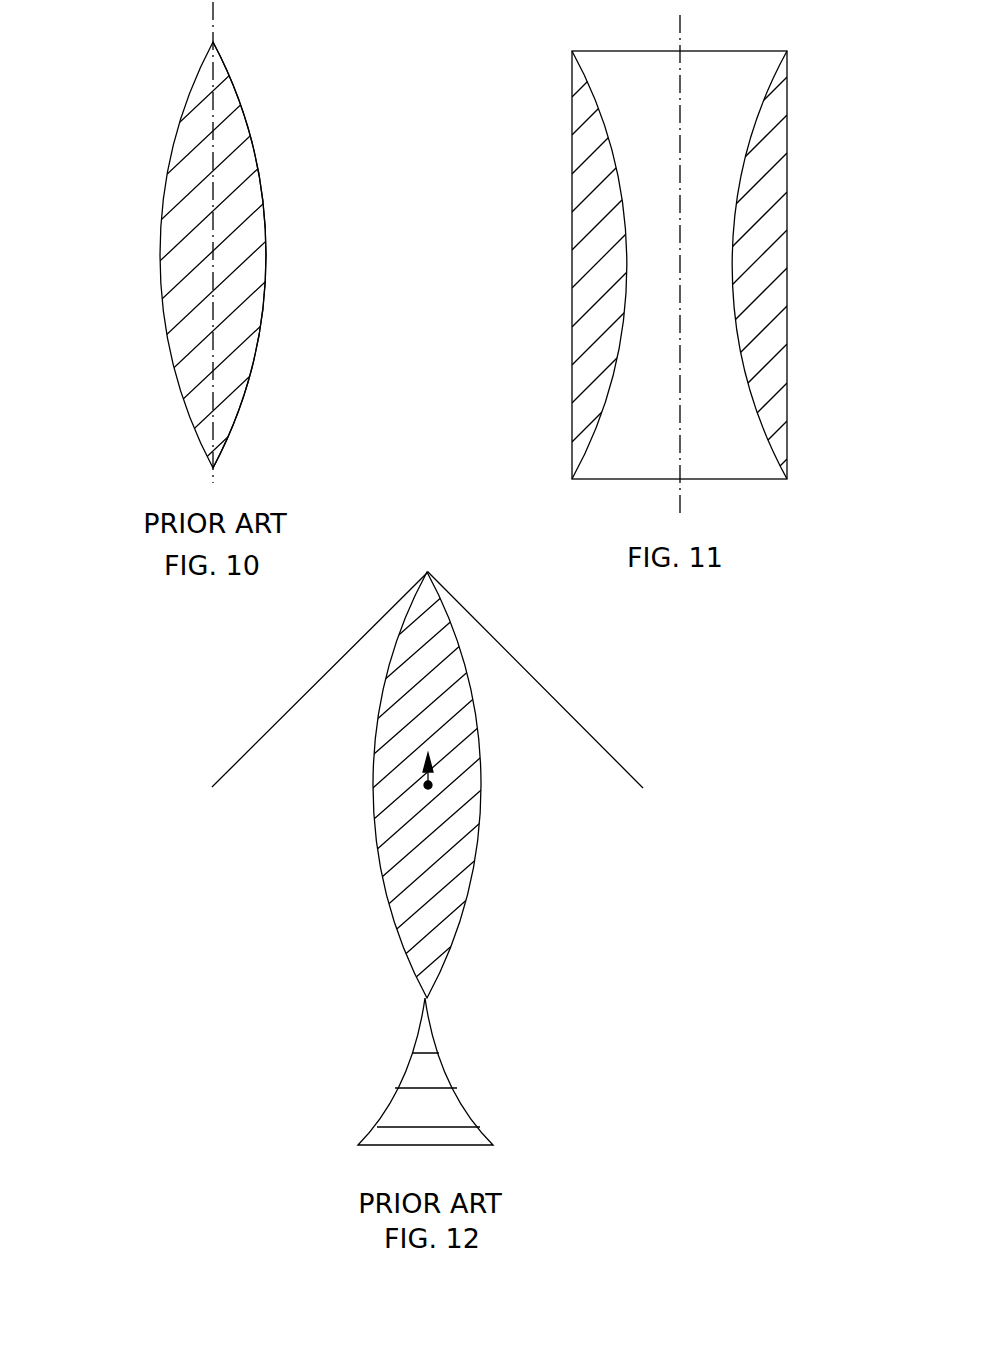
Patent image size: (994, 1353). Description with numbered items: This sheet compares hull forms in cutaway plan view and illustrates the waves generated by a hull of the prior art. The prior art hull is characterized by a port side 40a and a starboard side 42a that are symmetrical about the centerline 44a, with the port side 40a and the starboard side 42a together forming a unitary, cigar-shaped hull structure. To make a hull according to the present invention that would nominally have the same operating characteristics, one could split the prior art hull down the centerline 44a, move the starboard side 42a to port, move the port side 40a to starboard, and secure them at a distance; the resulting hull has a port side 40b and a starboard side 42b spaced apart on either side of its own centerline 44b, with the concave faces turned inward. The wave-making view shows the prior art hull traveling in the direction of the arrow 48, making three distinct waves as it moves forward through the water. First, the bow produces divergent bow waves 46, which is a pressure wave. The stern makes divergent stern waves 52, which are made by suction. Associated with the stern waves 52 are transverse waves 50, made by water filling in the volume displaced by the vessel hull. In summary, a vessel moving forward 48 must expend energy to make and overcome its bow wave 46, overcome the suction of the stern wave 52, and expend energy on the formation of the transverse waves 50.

In FIG. 10, the port side 40a is at (183, 210).
In FIG. 10, the starboard side 42a is at (238, 207).
In FIG. 10, the centerline 44a is at (213, 12).
In FIG. 11, the port side 40b is at (752, 212).
In FIG. 11, the starboard side 42b is at (602, 212).
In FIG. 11, the centerline 44b is at (680, 30).
In FIG. 12, the divergent bow waves 46 is at (305, 692).
In FIG. 12, the arrow indicating direction of travel 48 is at (428, 775).
In FIG. 12, the transverse waves 50 is at (435, 1133).
In FIG. 12, the divergent stern waves 52 is at (398, 1073).